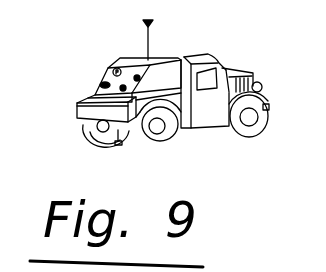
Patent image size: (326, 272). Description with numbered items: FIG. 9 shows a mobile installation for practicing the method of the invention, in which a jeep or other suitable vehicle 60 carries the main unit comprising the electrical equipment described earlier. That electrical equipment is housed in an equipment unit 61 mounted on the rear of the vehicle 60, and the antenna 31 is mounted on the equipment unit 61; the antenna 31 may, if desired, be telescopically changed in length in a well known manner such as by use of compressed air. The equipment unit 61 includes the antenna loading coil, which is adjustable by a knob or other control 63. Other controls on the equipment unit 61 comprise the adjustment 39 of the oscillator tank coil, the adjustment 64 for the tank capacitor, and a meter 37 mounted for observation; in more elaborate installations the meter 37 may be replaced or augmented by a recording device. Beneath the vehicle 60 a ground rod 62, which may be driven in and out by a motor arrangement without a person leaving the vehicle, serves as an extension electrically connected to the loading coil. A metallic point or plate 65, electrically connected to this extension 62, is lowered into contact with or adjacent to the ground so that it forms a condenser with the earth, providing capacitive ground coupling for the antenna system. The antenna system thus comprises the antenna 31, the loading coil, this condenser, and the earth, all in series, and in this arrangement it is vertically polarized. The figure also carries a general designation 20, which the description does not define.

The toy vehicle 20 is at (157, 93).
The antenna 31 is at (151, 35).
The meter 37 is at (113, 71).
The adjustment of oscillator tank coil 39 is at (88, 98).
The vehicle 60 is at (242, 73).
The equipment unit 61 is at (158, 60).
The ground rod 62 is at (114, 140).
The knob or other control 63 is at (100, 84).
The adjustment for tank capacitor 64 is at (137, 75).
The metallic point or plate 65 is at (117, 146).